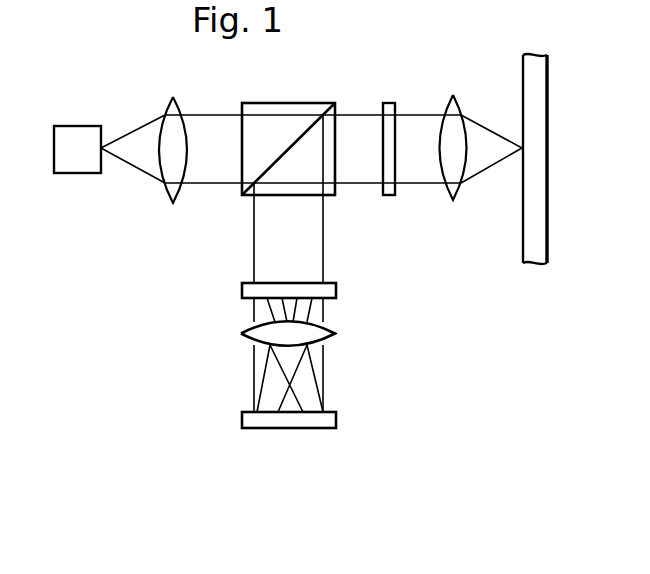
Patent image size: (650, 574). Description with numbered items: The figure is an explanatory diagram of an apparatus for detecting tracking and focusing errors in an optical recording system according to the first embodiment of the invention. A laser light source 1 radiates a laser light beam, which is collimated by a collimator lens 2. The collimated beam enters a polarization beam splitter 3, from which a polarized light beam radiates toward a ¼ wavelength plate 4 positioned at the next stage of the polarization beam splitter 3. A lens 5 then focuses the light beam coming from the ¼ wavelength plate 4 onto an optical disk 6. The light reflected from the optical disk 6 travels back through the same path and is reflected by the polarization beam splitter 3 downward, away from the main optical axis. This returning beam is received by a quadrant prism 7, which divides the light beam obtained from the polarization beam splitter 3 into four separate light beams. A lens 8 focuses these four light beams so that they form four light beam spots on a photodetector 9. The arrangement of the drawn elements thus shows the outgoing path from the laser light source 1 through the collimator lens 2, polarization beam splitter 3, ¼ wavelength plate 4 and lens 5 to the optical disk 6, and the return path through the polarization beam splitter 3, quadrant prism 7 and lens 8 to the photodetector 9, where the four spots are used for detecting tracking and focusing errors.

The laser light source 1 is at (73, 130).
The collimator lens 2 is at (172, 108).
The polarization beam splitter 3 is at (283, 110).
The ¼ wavelength plate 4 is at (388, 107).
The lens 5 is at (453, 197).
The optical disk 6 is at (530, 248).
The quadrant prism 7 is at (336, 288).
The lens 8 is at (332, 333).
The photodetector 9 is at (336, 415).